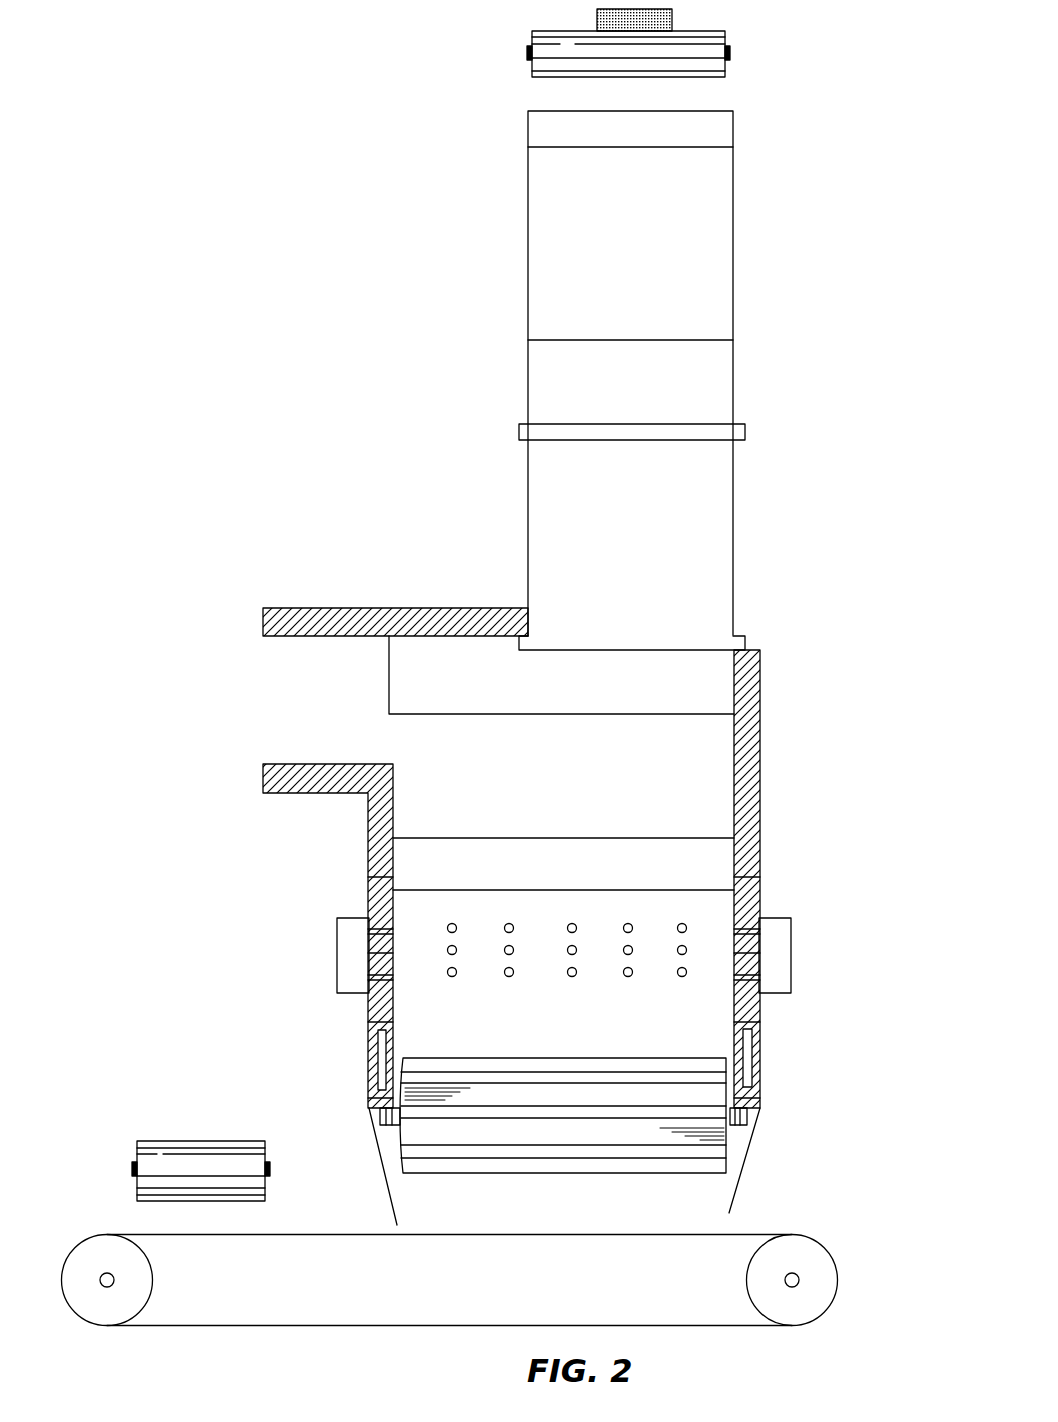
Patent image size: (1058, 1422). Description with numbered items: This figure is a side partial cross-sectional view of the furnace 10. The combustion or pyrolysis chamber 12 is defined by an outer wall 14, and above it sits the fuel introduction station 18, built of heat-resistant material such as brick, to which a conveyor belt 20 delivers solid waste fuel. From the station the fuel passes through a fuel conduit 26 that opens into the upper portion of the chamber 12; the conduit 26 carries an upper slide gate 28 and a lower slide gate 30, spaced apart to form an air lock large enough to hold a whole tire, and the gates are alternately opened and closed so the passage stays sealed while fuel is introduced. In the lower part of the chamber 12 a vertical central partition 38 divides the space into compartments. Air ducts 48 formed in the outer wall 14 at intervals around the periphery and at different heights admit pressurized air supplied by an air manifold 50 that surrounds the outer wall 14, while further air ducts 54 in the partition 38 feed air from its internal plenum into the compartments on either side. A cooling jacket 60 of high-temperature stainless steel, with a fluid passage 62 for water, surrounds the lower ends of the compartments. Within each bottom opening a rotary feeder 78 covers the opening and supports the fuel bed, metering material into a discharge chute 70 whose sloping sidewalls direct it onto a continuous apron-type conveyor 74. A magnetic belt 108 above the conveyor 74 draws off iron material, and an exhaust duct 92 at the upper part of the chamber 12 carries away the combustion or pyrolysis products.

The furnace 10 is at (789, 397).
The combustion or pyrolysis chamber 12 is at (705, 772).
The outer wall 14 is at (758, 806).
The fuel introduction stage or station 18 is at (718, 225).
The conveyor belt 20 is at (712, 44).
The fuel conduit 26 is at (712, 375).
The upper slide gate 28 is at (733, 434).
The lower slide gate 30 is at (693, 636).
The central partition or divider wall 38 is at (556, 848).
The air ducts 48 is at (742, 930).
The air manifold 50 is at (772, 946).
The air ducts 54 is at (686, 923).
The cooling jacket 60 is at (758, 1075).
The fluid passage 62 is at (753, 1044).
The discharge chute 70 is at (752, 1148).
The continuous apron-type conveyor 74 is at (700, 1233).
The rotary feeder 78 is at (606, 1125).
The exhaust duct 92 is at (308, 636).
The magnetic belt 108 is at (207, 1168).